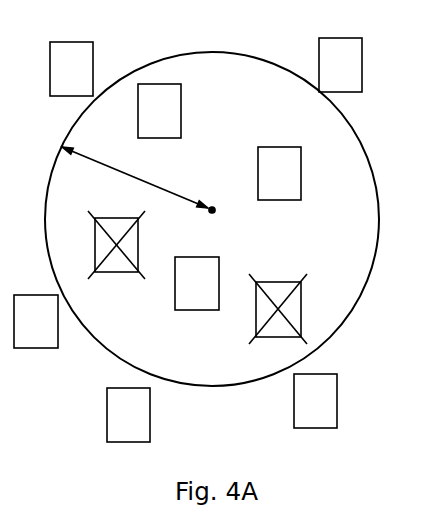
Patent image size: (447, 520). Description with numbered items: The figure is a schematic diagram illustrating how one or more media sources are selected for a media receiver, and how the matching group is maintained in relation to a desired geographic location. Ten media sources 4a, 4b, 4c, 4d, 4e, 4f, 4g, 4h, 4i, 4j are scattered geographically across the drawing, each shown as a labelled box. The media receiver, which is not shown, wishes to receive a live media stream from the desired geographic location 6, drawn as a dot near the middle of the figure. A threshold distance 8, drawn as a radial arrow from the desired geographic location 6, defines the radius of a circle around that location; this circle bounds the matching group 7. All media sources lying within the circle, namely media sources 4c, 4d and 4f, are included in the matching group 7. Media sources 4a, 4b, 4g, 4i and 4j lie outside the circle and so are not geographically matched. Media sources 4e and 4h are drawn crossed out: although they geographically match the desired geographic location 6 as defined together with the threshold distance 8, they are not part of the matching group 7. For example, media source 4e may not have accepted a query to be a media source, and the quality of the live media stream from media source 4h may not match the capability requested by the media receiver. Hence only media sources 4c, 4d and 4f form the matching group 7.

The media source 4a is at (58, 82).
The media source 4b is at (327, 78).
The media source 4c is at (146, 124).
The media source 4d is at (266, 187).
The media source 4e is at (103, 258).
The media source 4f is at (184, 297).
The media source 4g is at (23, 335).
The media source 4h is at (265, 323).
The media source 4i is at (118, 428).
The media source 4j is at (305, 414).
The desired geographic location 6 is at (213, 207).
The matching group 7 is at (220, 57).
The threshold distance 8 is at (125, 172).